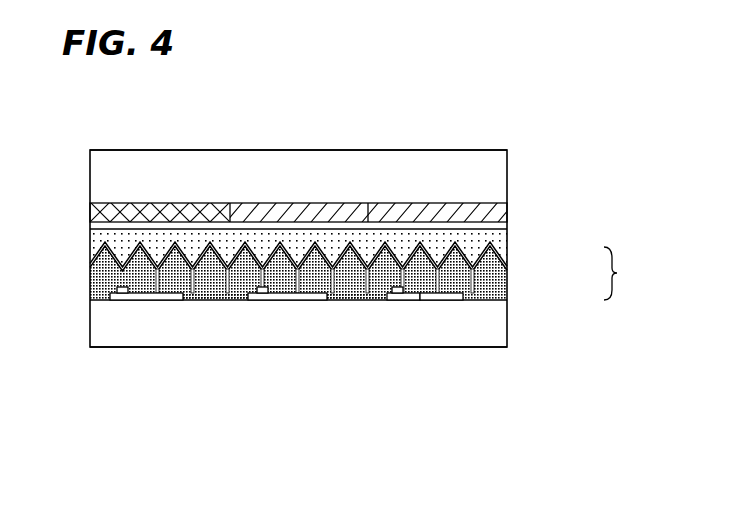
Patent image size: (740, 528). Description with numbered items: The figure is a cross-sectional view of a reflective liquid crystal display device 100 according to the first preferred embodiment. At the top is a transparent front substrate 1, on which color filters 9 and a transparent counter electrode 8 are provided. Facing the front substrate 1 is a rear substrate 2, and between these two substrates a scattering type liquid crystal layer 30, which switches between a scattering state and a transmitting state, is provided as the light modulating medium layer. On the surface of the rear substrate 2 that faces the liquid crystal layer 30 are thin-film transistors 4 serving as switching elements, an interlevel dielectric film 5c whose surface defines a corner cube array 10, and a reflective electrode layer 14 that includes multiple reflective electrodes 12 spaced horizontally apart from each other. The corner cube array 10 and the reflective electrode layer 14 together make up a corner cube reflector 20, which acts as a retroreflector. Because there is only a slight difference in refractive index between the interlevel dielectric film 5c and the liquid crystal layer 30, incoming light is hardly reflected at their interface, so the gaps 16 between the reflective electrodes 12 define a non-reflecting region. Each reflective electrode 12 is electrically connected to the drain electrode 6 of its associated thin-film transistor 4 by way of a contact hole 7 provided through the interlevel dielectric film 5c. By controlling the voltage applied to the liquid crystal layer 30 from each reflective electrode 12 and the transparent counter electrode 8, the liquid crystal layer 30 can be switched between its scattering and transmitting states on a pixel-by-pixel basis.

The reflective liquid crystal display device 100 is at (490, 117).
The front substrate 1 is at (497, 170).
The color filters 9 is at (498, 209).
The transparent counter electrode 8 is at (507, 224).
The scattering type liquid crystal layer 30 is at (502, 242).
The reflective electrode layer 14 is at (502, 252).
The corner cube array 10 is at (503, 268).
The gaps 16 is at (367, 261).
The reflective electrodes 12 is at (263, 266).
The interlevel dielectric film 5c is at (507, 291).
The contact hole 7 is at (418, 293).
The drain electrode 6 is at (442, 293).
The thin-film transistors 4 is at (397, 293).
The rear substrate 2 is at (495, 333).
The corner cube reflector 20 is at (625, 273).